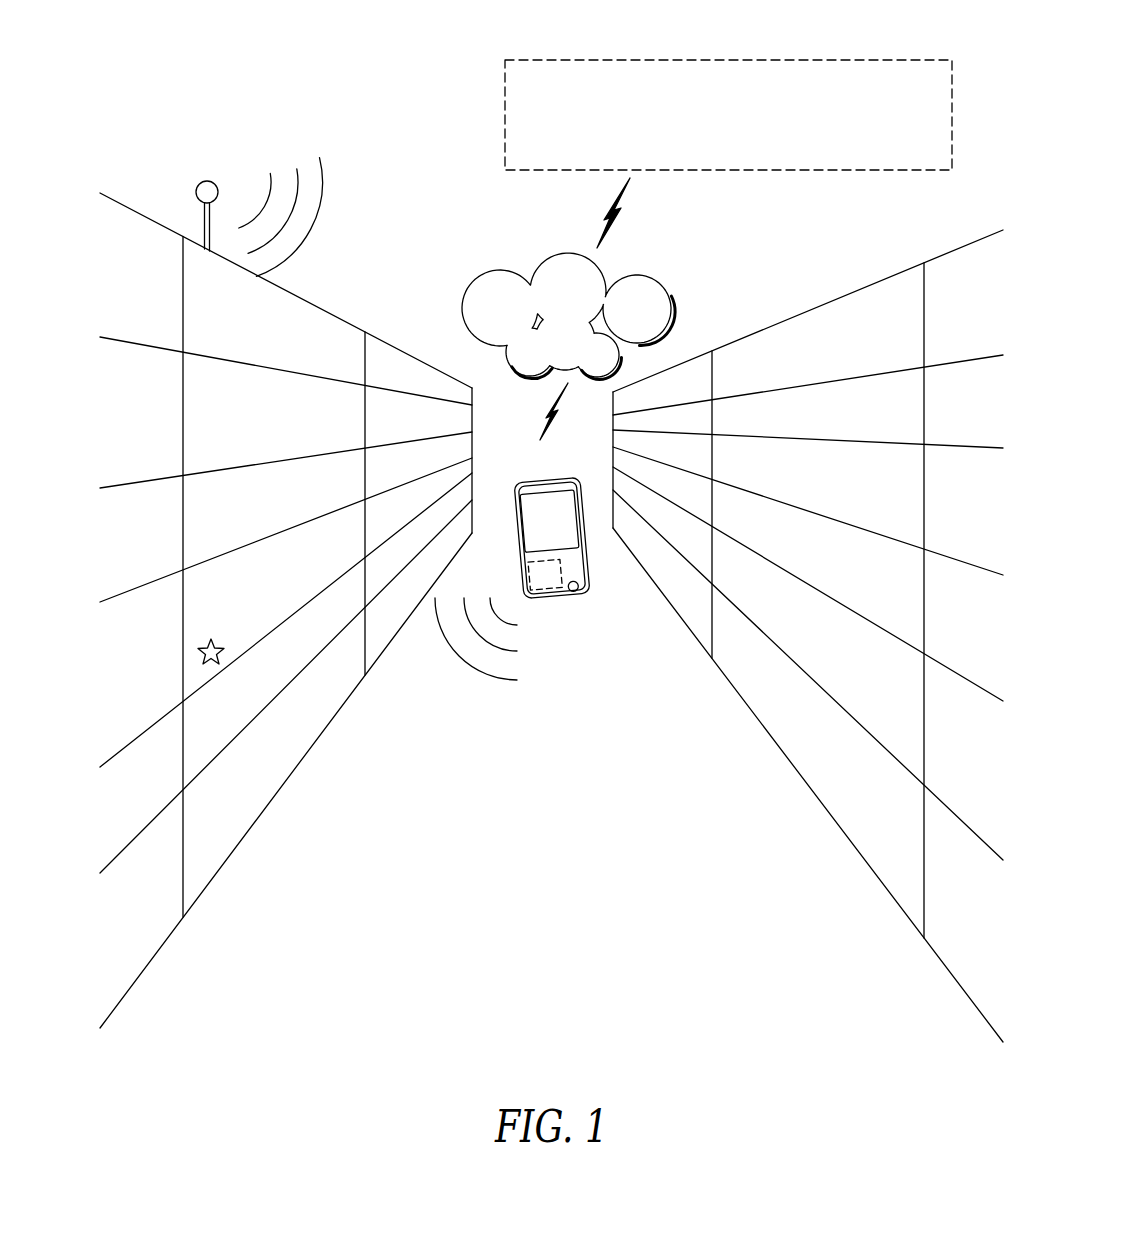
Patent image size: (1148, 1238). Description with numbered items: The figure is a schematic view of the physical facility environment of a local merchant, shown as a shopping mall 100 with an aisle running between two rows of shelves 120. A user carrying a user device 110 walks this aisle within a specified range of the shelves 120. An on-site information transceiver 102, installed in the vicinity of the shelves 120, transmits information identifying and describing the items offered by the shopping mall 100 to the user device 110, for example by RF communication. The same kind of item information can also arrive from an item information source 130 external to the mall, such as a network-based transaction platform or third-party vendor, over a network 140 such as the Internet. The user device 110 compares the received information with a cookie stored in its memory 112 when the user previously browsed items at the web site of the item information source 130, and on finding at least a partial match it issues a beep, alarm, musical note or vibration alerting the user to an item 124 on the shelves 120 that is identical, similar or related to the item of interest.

The shopping mall 100 is at (446, 84).
The on-site information transceiver 102 is at (205, 182).
The user device 110 is at (566, 597).
The memory 112 is at (540, 590).
The shelves 120 is at (153, 958).
The item 124 is at (211, 641).
The item information source 130 is at (728, 154).
The network 140 is at (463, 312).